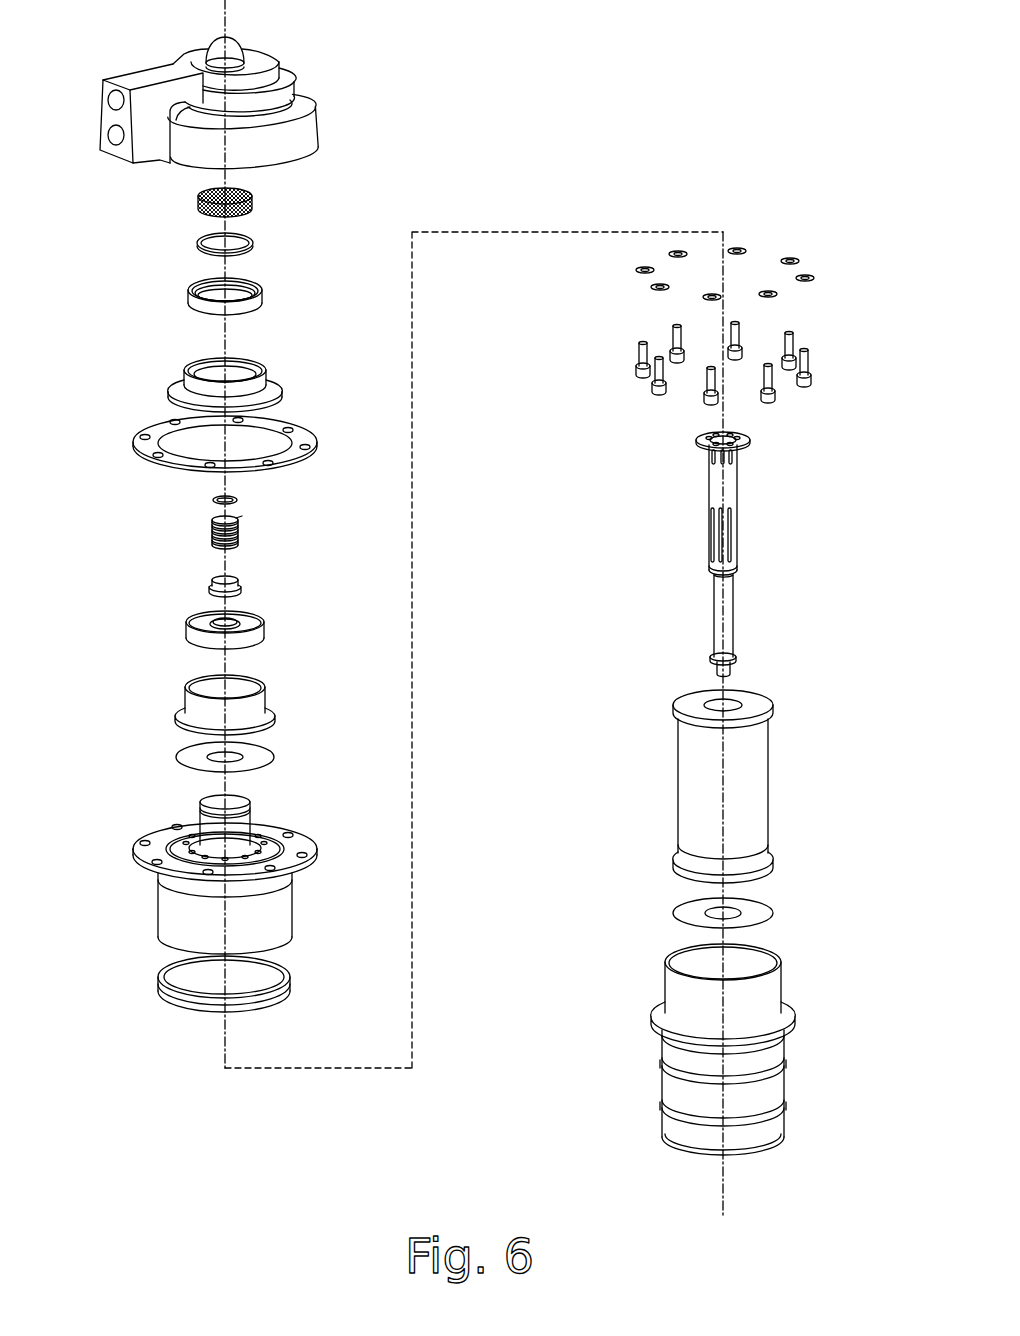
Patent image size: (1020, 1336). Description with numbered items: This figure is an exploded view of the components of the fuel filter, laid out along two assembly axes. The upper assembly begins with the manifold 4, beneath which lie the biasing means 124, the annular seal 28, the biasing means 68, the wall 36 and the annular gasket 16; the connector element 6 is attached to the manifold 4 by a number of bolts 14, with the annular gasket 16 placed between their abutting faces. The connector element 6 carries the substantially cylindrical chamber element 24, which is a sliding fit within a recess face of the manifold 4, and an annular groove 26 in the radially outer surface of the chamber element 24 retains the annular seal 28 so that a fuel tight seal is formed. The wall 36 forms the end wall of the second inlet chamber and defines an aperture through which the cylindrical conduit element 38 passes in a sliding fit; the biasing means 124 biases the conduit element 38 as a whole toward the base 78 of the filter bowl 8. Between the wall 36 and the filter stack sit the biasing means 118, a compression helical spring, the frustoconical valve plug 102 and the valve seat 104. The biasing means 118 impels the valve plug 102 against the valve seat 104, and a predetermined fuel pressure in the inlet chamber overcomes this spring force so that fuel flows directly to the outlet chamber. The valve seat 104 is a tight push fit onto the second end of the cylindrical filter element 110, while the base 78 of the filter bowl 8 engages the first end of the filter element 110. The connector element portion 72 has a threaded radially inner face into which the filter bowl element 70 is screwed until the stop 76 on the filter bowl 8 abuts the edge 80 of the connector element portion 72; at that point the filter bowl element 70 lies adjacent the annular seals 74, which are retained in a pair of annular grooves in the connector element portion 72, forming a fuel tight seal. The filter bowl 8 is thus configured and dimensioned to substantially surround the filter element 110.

The manifold 4 is at (338, 95).
The biasing means 124 is at (252, 200).
The annular seal 28 is at (252, 243).
The biasing means 68 is at (260, 295).
The wall 36 is at (263, 373).
The annular gasket 16 is at (307, 428).
The biasing means 118 is at (240, 530).
The valve plug 102 is at (263, 630).
The valve seat 104 is at (265, 698).
The connector element 6 is at (325, 847).
The chamber element 24 is at (200, 825).
The annular groove 26 is at (250, 815).
The connector element portion 72 is at (158, 907).
The edge 80 is at (160, 940).
The annular seals 74 is at (158, 988).
The bolts 14 is at (817, 362).
The conduit element 38 is at (758, 497).
The filter element 110 is at (770, 788).
The filter bowl 8 is at (797, 1049).
The filter bowl element 70 is at (783, 983).
The stop 76 is at (793, 1018).
The filter bowl base 78 is at (702, 1153).